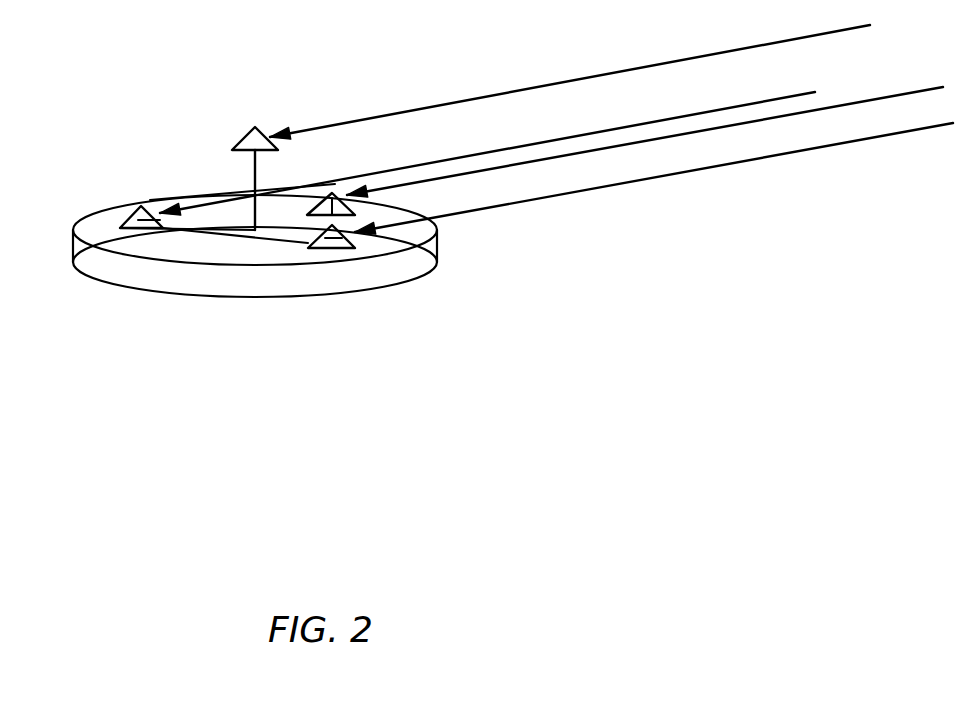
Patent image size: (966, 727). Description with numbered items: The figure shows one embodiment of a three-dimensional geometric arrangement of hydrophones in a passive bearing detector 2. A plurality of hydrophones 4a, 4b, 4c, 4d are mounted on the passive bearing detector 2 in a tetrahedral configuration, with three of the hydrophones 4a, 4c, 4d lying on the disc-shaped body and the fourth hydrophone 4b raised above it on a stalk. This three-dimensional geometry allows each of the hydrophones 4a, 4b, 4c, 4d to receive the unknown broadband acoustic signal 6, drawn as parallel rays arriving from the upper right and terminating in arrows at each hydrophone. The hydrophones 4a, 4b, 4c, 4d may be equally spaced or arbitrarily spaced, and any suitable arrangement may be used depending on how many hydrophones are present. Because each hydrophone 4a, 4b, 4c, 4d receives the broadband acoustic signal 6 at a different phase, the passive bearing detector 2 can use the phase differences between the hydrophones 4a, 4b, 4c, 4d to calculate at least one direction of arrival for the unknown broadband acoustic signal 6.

The passive bearing detector 2 is at (222, 297).
The hydrophone 4a is at (137, 204).
The hydrophone 4b is at (243, 138).
The hydrophone 4c is at (332, 191).
The hydrophone 4d is at (348, 249).
The unknown broadband acoustic signal 6 is at (616, 73).